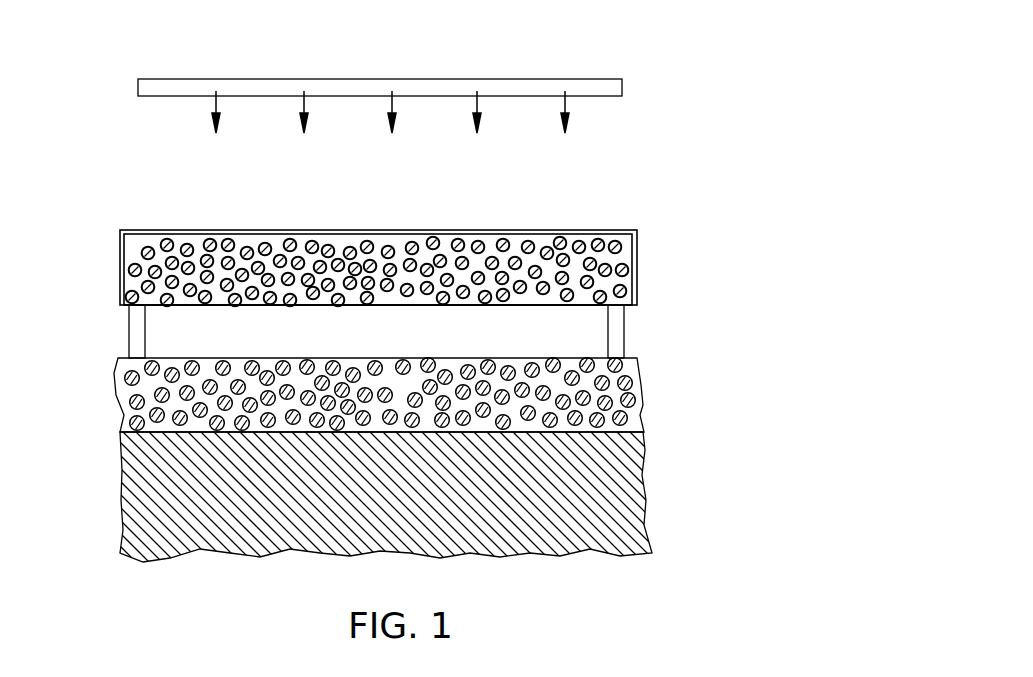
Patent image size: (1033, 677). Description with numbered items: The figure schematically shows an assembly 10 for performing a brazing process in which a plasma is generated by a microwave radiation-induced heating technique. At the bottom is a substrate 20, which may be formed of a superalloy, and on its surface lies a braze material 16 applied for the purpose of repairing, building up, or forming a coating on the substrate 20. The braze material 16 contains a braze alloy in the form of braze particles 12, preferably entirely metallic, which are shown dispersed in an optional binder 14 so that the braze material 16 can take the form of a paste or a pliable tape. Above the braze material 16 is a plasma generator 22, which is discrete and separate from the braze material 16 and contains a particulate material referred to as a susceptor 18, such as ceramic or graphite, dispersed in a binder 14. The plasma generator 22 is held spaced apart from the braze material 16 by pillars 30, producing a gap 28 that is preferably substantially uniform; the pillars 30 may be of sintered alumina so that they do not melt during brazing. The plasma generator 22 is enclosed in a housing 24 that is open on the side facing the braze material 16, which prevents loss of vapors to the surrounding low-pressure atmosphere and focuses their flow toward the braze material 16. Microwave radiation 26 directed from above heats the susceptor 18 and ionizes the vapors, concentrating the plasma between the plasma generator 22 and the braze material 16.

The assembly 10 is at (80, 158).
The braze particles 12 is at (130, 398).
The binder 14 is at (378, 236).
The braze material 16 is at (637, 387).
The susceptor 18 is at (622, 248).
The substrate 20 is at (618, 468).
The plasma generator 22 is at (517, 302).
The housing 24 is at (585, 231).
The microwave radiation 26 is at (610, 89).
The gap 28 is at (167, 322).
The pillars 30 is at (615, 332).